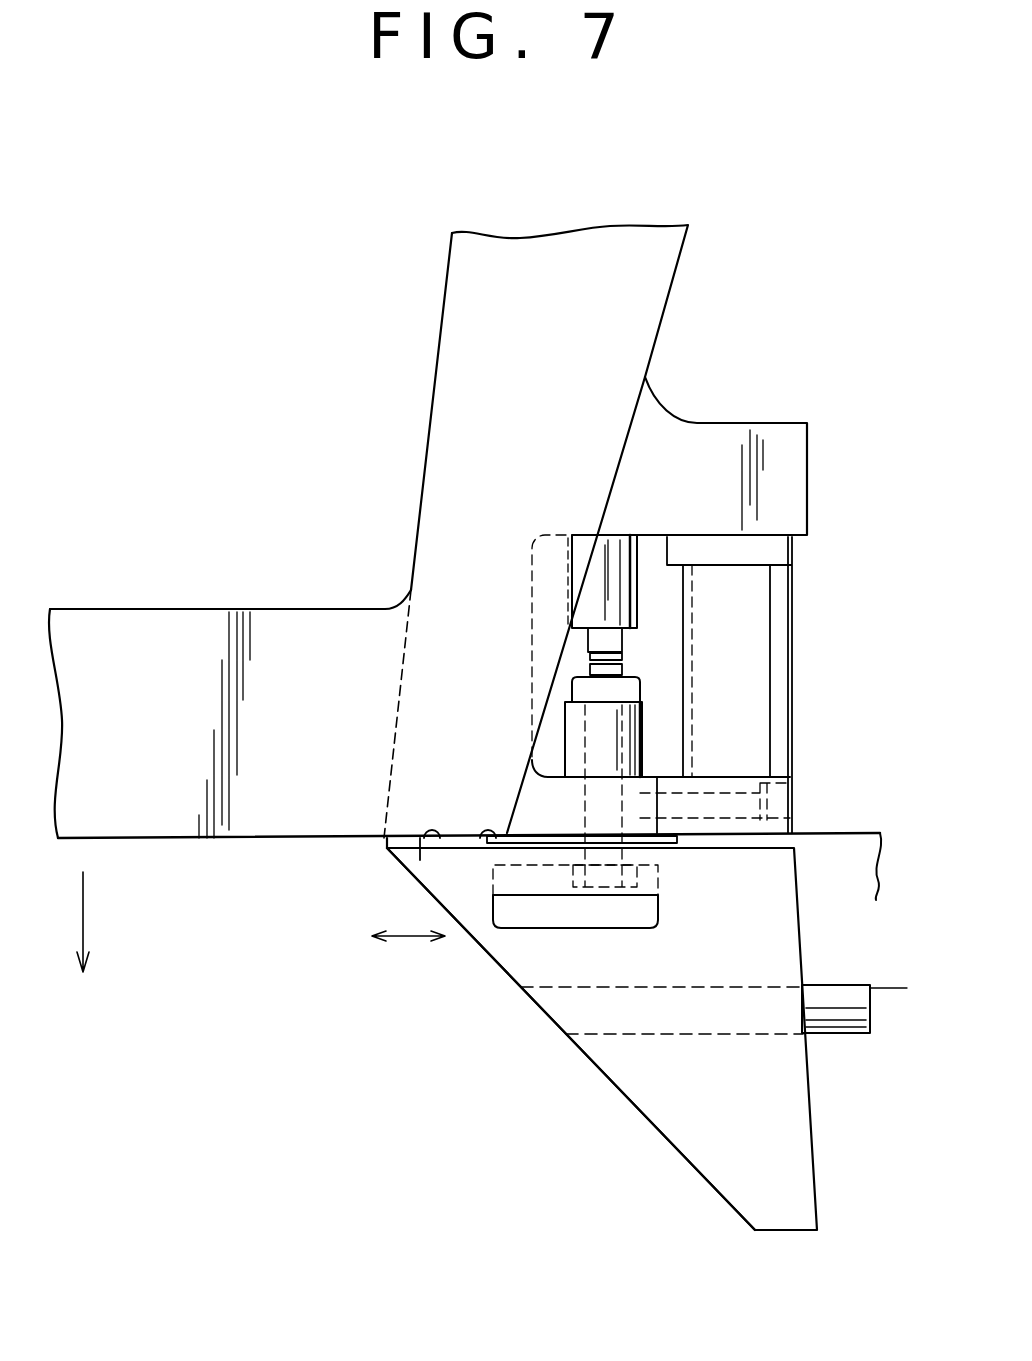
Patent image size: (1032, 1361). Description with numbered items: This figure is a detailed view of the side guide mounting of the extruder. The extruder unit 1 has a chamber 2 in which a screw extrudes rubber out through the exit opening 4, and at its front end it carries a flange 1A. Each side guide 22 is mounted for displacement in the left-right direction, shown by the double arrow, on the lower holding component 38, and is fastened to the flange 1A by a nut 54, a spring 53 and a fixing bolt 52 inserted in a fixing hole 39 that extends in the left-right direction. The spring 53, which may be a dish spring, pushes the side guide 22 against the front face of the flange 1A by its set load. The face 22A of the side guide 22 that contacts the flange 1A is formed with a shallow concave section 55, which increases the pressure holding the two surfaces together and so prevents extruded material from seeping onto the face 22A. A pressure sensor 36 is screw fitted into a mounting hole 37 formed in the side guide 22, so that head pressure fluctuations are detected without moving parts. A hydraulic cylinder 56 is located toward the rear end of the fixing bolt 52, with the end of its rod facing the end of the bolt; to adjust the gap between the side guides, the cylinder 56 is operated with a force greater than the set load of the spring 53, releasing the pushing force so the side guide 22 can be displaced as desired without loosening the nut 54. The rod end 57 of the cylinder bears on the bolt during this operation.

The extruder unit 1 is at (733, 410).
The flange 1A is at (728, 783).
The chamber 2 is at (440, 372).
The exit opening 4 is at (385, 787).
The side guide 22 is at (672, 1115).
The face 22A is at (414, 878).
The pressure sensor 36 is at (843, 1013).
The mounting hole 37 is at (606, 1030).
The lower holding component 38 is at (848, 860).
The fixing hole 39 is at (527, 857).
The fixing bolt 52 is at (592, 880).
The spring 53 is at (635, 727).
The nut 54 is at (633, 688).
The shallow concave section 55 is at (480, 840).
The hydraulic cylinder 56 is at (627, 535).
The stem 57 is at (623, 645).